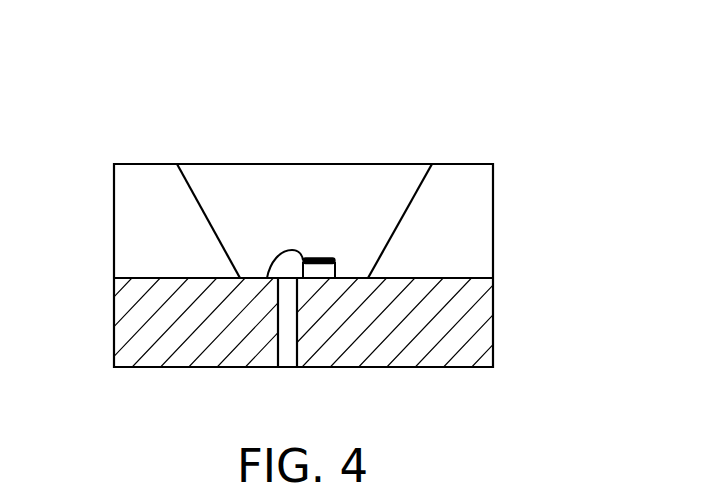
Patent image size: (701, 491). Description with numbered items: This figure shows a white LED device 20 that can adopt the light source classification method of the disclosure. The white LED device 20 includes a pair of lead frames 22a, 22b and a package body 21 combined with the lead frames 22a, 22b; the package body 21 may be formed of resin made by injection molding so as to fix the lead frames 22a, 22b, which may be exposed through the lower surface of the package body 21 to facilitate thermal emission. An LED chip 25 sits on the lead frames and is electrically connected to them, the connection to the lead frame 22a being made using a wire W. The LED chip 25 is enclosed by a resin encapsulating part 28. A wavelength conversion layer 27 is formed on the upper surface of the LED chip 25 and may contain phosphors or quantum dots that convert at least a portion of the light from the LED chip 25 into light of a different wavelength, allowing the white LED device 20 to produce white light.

The white LED device 20 is at (465, 34).
The package body 21 is at (121, 229).
The lead frame 22a is at (122, 343).
The lead frame 22b is at (483, 337).
The LED chip 25 is at (331, 269).
The wavelength conversion layer 27 is at (310, 258).
The resin encapsulating part 28 is at (213, 172).
The wire W is at (293, 250).